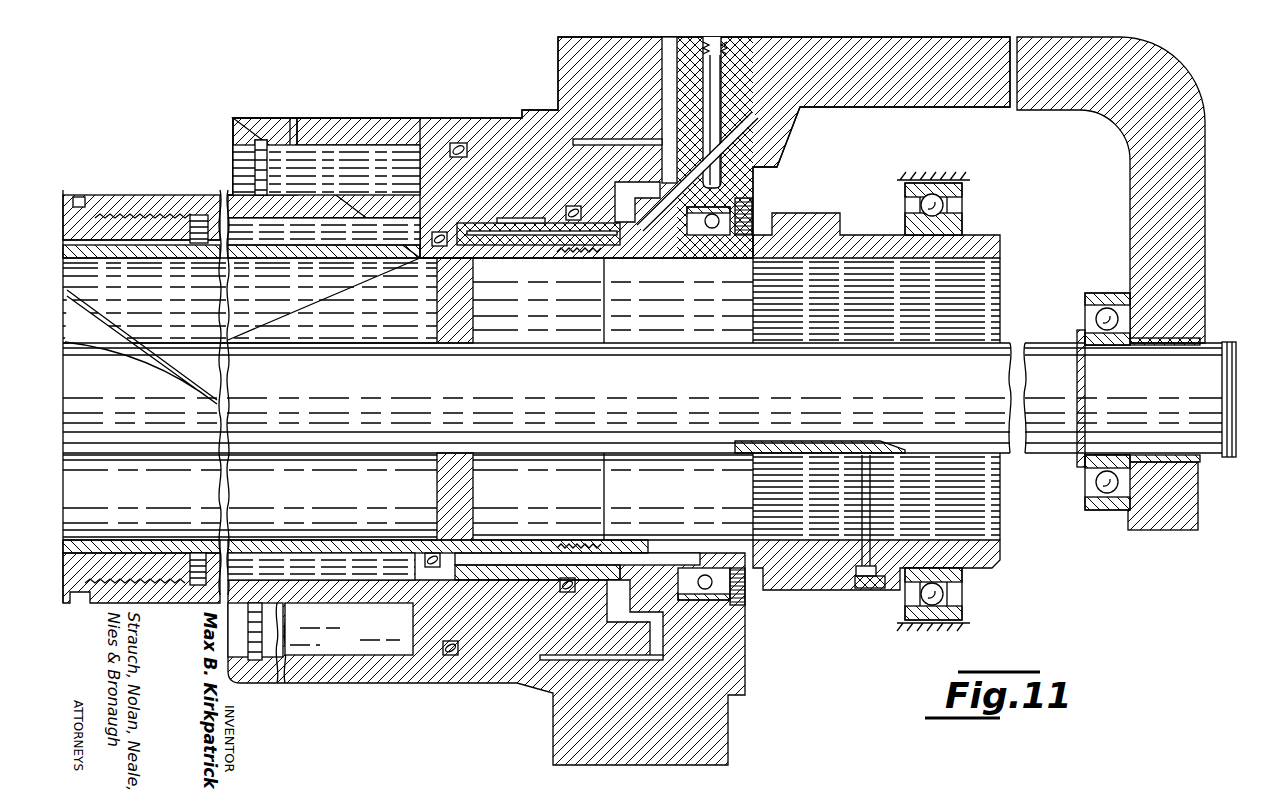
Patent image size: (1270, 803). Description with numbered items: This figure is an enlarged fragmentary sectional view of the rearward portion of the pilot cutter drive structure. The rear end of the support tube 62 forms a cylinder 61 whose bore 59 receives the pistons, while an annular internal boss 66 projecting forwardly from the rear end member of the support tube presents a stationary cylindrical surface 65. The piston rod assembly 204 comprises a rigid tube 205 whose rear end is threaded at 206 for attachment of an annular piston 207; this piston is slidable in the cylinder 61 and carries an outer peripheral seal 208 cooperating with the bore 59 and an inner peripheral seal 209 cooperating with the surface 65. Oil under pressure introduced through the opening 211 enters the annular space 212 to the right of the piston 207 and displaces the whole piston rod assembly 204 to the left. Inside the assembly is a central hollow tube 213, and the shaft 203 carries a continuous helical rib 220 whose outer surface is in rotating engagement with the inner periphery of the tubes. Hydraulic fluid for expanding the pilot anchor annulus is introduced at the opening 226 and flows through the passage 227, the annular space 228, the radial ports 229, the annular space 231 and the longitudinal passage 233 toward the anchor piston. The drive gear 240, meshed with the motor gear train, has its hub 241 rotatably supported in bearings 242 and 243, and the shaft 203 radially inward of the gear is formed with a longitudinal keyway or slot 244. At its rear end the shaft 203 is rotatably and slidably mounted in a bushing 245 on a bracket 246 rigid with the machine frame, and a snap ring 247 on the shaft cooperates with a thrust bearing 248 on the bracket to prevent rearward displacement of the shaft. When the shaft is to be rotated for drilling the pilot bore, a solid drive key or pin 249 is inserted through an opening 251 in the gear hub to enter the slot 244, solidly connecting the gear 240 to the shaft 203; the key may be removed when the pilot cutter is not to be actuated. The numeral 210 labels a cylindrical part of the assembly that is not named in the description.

The bore 59 is at (325, 150).
The support tube 62 is at (413, 115).
The cylinder 61 is at (468, 118).
The opening 211 is at (668, 40).
The opening 226 is at (730, 83).
The threaded rear end 206 is at (112, 222).
The longitudinal passage 233 is at (172, 220).
The outer peripheral seal 208 is at (428, 166).
The annular space 212 is at (627, 195).
The annular space 231 is at (452, 225).
The inner peripheral seal 209 is at (578, 212).
The drive gear 240 is at (806, 214).
The bearing 243 is at (965, 205).
The helical rib 220 is at (108, 320).
The cylindrical surface 65 is at (520, 246).
The radial ports 229 is at (488, 247).
The annular space 228 is at (551, 254).
The internal boss 66 is at (612, 246).
The bearing 242 is at (703, 238).
The passage 227 is at (645, 250).
The thrust bearing 248 is at (1092, 293).
The bracket 246 is at (1190, 287).
The snap ring 247 is at (1078, 337).
The shaft 203 is at (538, 432).
The keyway 244 is at (758, 455).
The bushing 245 is at (1180, 468).
The rigid tube 205 is at (128, 568).
The central hollow tube 213 is at (185, 548).
The cylinder 210 is at (745, 522).
The drive key 249 is at (854, 529).
The opening 251 is at (872, 565).
The hub 241 is at (897, 578).
The piston rod assembly 204 is at (334, 615).
The annular piston 207 is at (475, 650).